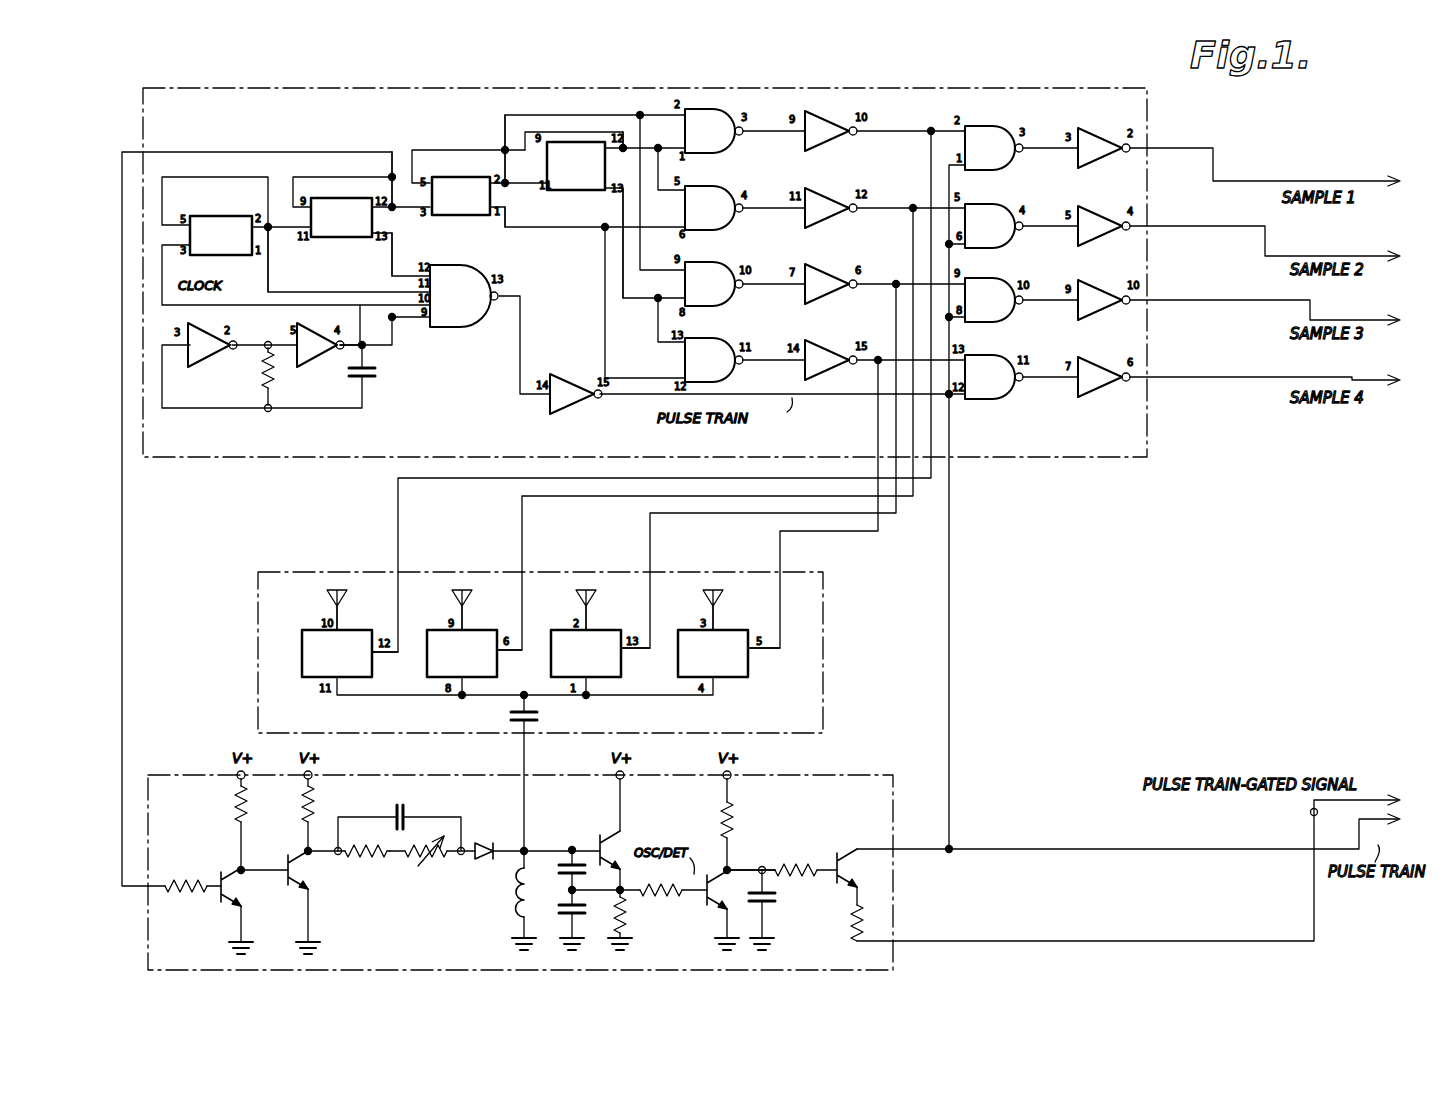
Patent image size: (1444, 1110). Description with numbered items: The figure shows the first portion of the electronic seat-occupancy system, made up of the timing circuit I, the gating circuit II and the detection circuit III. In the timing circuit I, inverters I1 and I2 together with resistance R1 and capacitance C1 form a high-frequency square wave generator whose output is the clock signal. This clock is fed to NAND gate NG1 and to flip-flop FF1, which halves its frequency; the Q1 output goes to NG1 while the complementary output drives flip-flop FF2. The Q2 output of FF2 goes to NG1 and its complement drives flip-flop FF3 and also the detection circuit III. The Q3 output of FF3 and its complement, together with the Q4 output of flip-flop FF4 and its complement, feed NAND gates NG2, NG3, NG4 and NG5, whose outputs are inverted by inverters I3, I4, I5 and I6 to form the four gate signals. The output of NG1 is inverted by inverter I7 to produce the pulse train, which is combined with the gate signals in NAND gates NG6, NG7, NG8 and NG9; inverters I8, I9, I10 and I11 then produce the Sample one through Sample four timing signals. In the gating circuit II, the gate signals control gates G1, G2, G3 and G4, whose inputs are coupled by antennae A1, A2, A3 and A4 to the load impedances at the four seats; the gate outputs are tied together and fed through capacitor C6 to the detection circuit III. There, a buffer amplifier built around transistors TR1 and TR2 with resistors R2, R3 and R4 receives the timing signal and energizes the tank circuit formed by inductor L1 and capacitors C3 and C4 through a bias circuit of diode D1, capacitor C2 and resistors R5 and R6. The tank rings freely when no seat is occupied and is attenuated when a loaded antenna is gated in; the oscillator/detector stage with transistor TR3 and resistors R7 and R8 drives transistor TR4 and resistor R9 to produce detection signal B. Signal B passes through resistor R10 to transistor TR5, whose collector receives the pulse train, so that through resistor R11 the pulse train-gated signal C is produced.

The timing circuit I is at (235, 462).
The gating circuit II is at (292, 572).
The detection circuit III is at (206, 775).
The flip-flop FF1 is at (221, 235).
The flip-flop FF2 is at (341, 217).
The flip-flop FF3 is at (461, 196).
The flip-flop FF4 is at (576, 166).
The Q1 output Q1 is at (292, 258).
The Q2 output Q2 is at (390, 252).
The Q3 output Q3 is at (504, 228).
The Q4 output Q4 is at (622, 195).
The NAND gate NG1 is at (464, 296).
The NAND gate NG2 is at (714, 131).
The NAND gate NG3 is at (714, 208).
The NAND gate NG4 is at (714, 284).
The NAND gate NG5 is at (714, 360).
The NAND gate NG6 is at (994, 148).
The NAND gate NG7 is at (994, 226).
The NAND gate NG8 is at (994, 300).
The NAND gate NG9 is at (994, 377).
The inverter I1 is at (206, 362).
The inverter I2 is at (310, 360).
The inverter I3 is at (832, 125).
The inverter I4 is at (830, 202).
The inverter I5 is at (830, 278).
The inverter I6 is at (830, 354).
The inverter I7 is at (560, 375).
The inverter I8 is at (1098, 130).
The inverter I9 is at (1098, 210).
The inverter I10 is at (1098, 286).
The inverter I11 is at (1098, 362).
The resistance R1 is at (262, 375).
The resistor R2 is at (180, 878).
The resistor R3 is at (236, 799).
The resistor R4 is at (303, 799).
The resistor R5 is at (356, 864).
The resistor R6 is at (430, 864).
The resistor R7 is at (628, 926).
The resistor R8 is at (654, 895).
The resistor R9 is at (736, 816).
The resistor R10 is at (798, 856).
The resistor R11 is at (852, 916).
The capacitance C1 is at (380, 370).
The capacitor C2 is at (406, 806).
The capacitor C3 is at (560, 864).
The capacitor C4 is at (556, 916).
The capacitor C6 is at (540, 716).
The transistor TR1 is at (218, 910).
The transistor TR2 is at (300, 894).
The transistor TR3 is at (616, 826).
The transistor TR4 is at (706, 860).
The transistor TR5 is at (848, 846).
The diode D1 is at (484, 840).
The inductor L1 is at (514, 885).
The gate G1 is at (688, 626).
The gate G2 is at (560, 626).
The gate G3 is at (433, 626).
The gate G4 is at (308, 626).
The antenna A1 is at (721, 590).
The antenna A2 is at (594, 590).
The antenna A3 is at (470, 592).
The antenna A4 is at (345, 592).
The detection circuit signal B is at (766, 864).
The pulse train-gated signal C is at (1310, 812).